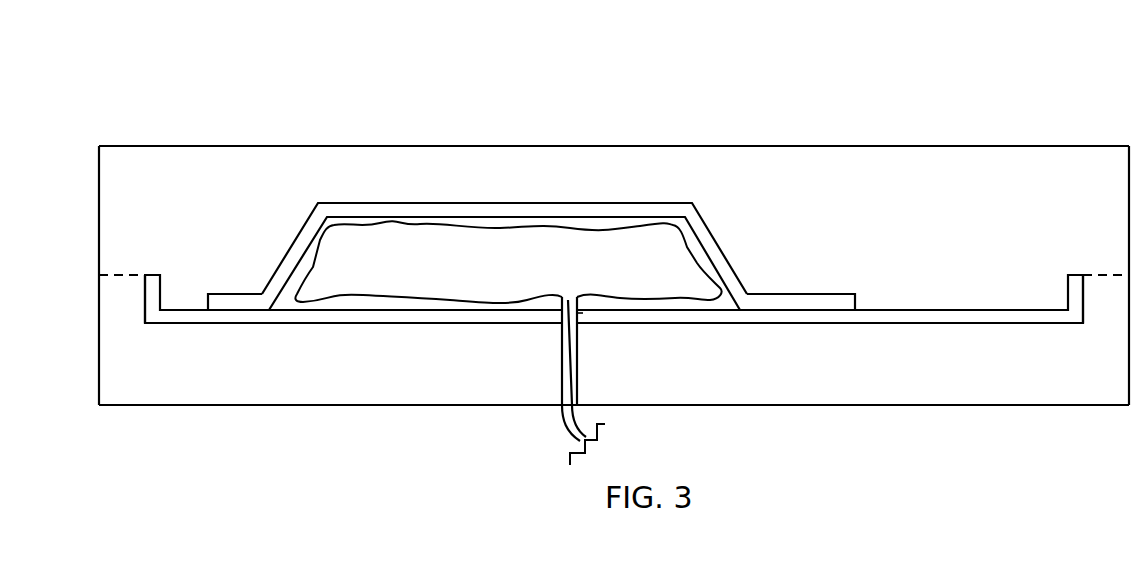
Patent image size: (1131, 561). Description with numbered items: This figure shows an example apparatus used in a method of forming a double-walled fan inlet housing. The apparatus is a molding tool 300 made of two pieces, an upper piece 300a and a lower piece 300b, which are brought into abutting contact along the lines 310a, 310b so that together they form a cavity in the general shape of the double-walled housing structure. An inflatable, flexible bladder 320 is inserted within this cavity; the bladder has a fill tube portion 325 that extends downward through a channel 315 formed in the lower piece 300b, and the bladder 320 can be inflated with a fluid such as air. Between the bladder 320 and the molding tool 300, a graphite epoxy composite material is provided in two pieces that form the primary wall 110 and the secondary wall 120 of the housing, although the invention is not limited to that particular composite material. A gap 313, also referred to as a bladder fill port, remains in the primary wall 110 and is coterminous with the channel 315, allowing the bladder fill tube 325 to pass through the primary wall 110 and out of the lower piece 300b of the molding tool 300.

The molding tool 300 is at (955, 106).
The upper piece 300a is at (1018, 153).
The lower piece 300b is at (885, 397).
The primary wall 110 is at (807, 315).
The line 310a is at (131, 272).
The line 310b is at (1100, 272).
The secondary wall 120 is at (672, 207).
The inflatable, flexible bladder 320 is at (440, 235).
The channel 315 is at (565, 363).
The gap (bladder fill port) 313 is at (577, 314).
The fill tube portion 325 is at (564, 419).